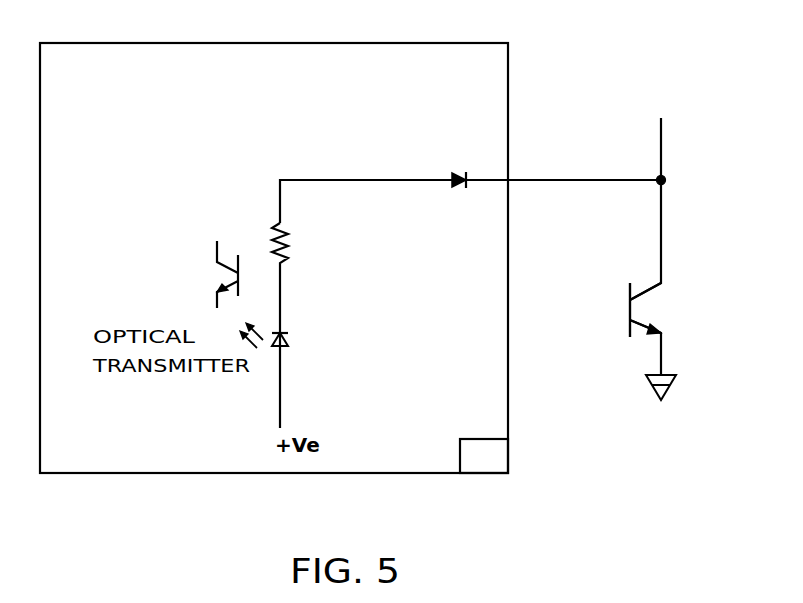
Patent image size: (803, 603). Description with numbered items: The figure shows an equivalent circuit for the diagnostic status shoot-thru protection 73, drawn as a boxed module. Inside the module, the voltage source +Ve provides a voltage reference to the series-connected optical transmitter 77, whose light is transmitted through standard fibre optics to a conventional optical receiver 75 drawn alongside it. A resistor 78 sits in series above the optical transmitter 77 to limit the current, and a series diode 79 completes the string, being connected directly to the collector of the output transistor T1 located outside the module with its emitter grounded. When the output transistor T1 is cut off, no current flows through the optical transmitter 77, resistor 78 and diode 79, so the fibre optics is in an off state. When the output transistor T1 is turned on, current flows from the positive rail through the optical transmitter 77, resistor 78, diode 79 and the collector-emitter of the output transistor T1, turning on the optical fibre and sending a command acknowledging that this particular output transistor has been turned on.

The diagnostic status shoot-thru protection 73 is at (484, 456).
The optical receiver 75 is at (226, 272).
The optical transmitter 77 is at (290, 342).
The resistor 78 is at (272, 250).
The series diode 79 is at (460, 175).
The output transistor T1 is at (662, 310).